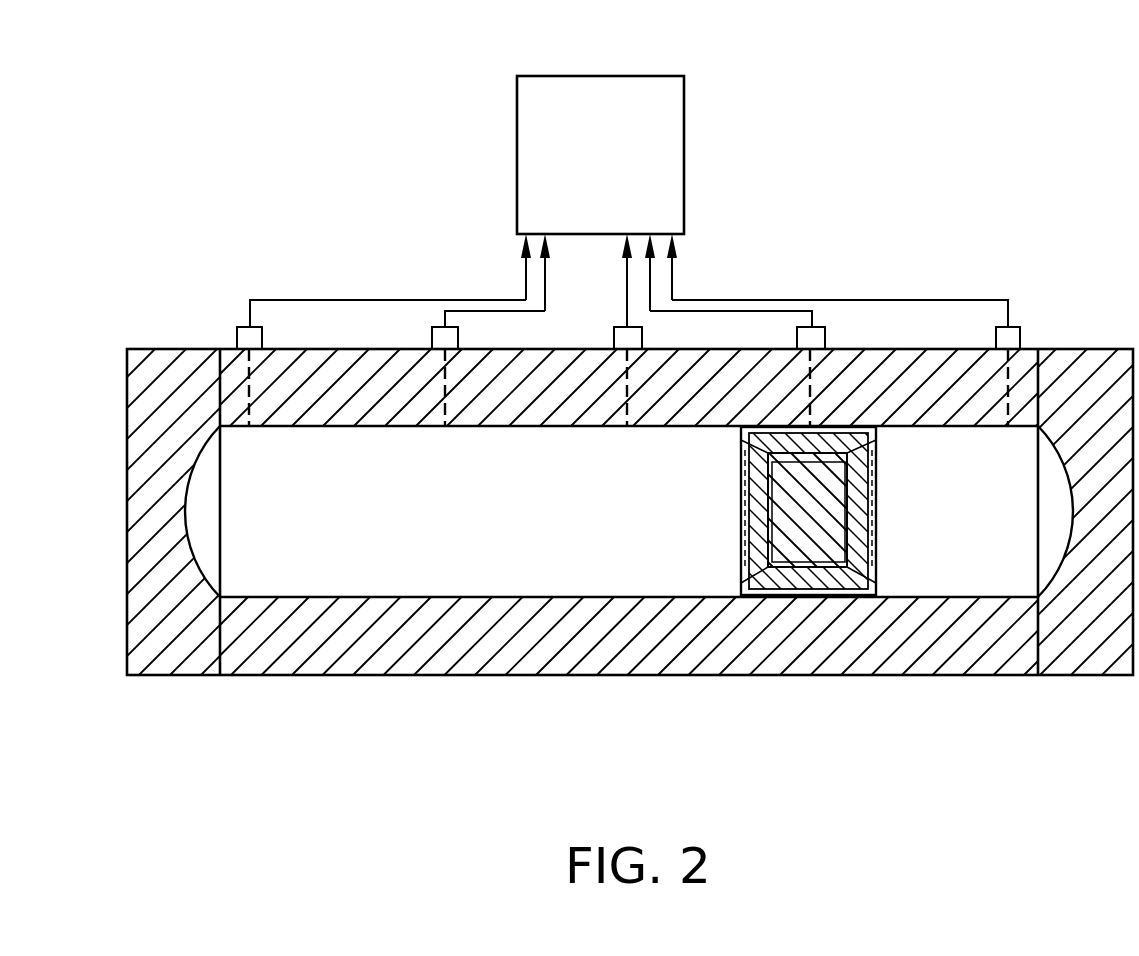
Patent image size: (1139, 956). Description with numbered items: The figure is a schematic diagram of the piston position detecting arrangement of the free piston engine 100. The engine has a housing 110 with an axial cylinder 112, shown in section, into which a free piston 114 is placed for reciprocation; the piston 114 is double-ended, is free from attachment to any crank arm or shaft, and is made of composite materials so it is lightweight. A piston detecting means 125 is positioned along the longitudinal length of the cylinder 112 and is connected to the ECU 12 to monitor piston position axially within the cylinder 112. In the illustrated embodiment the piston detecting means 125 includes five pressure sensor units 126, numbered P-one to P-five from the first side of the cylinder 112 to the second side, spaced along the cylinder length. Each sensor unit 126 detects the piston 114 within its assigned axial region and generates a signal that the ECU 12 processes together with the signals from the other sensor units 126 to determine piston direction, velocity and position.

The free piston engine 100 is at (902, 205).
The housing 110 is at (863, 662).
The axial cylinder 112 is at (408, 600).
The free piston 114 is at (762, 585).
The ECU 12 is at (670, 115).
The piston detecting means 125 is at (407, 208).
The sensor units 126 is at (242, 335).